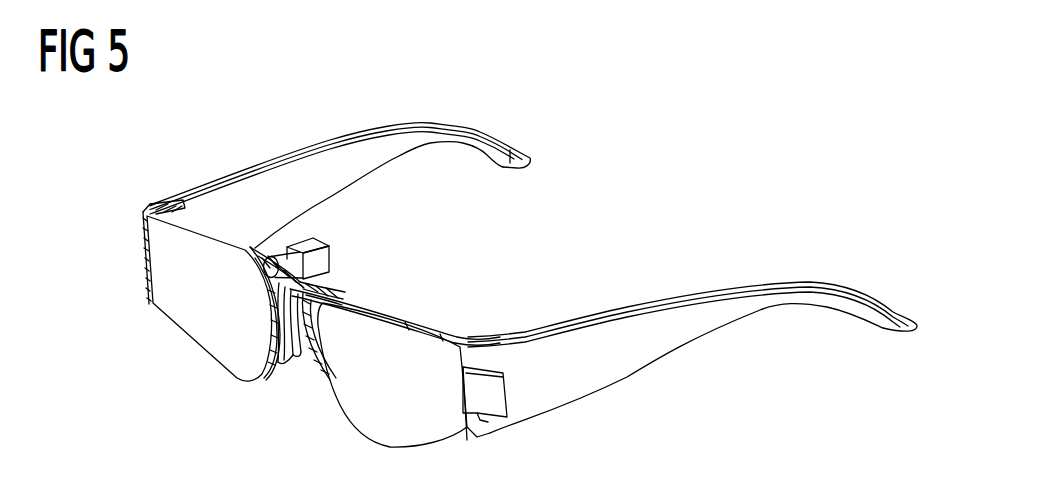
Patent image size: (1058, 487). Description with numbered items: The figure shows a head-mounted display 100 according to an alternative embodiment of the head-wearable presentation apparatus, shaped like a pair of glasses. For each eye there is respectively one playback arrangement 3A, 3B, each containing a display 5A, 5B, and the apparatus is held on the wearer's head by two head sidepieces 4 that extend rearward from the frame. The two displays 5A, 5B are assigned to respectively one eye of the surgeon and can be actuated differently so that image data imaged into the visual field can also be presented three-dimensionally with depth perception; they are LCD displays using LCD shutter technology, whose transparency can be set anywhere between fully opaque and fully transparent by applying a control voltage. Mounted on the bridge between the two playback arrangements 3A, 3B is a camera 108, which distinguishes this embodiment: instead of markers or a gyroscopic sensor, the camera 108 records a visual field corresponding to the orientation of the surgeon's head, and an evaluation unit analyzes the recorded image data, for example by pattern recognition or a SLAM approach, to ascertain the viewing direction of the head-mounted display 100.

The head-mounted display 100 is at (580, 125).
The head sidepieces 4 is at (284, 180).
The playback arrangement 3A is at (181, 349).
The playback arrangement 3B is at (349, 382).
The display 5A is at (168, 305).
The display 5B is at (372, 428).
The camera 108 is at (334, 254).